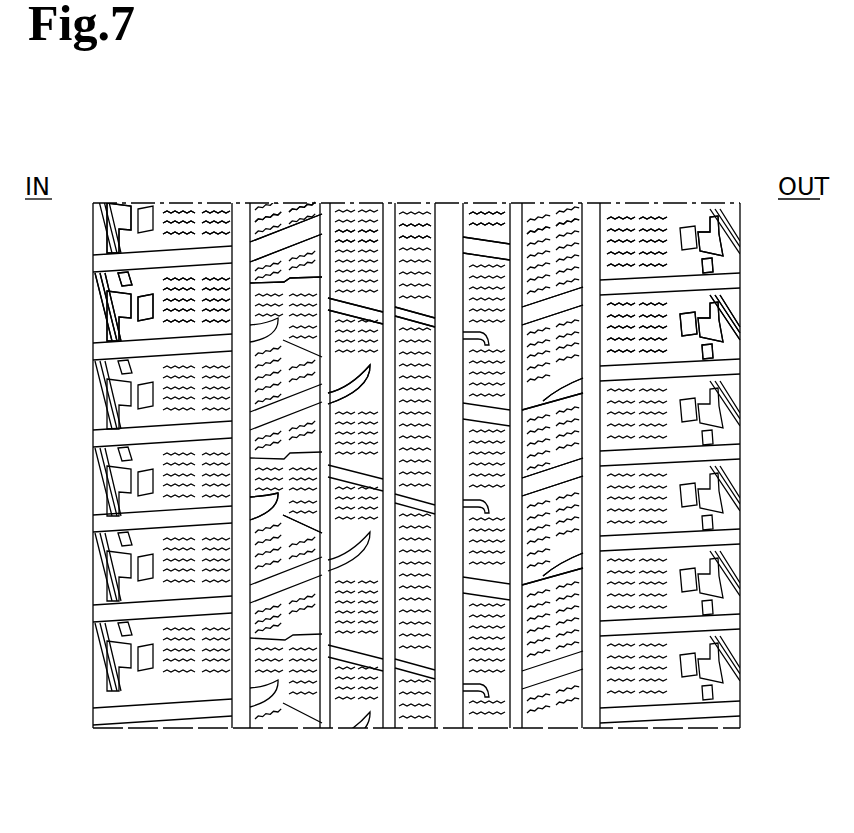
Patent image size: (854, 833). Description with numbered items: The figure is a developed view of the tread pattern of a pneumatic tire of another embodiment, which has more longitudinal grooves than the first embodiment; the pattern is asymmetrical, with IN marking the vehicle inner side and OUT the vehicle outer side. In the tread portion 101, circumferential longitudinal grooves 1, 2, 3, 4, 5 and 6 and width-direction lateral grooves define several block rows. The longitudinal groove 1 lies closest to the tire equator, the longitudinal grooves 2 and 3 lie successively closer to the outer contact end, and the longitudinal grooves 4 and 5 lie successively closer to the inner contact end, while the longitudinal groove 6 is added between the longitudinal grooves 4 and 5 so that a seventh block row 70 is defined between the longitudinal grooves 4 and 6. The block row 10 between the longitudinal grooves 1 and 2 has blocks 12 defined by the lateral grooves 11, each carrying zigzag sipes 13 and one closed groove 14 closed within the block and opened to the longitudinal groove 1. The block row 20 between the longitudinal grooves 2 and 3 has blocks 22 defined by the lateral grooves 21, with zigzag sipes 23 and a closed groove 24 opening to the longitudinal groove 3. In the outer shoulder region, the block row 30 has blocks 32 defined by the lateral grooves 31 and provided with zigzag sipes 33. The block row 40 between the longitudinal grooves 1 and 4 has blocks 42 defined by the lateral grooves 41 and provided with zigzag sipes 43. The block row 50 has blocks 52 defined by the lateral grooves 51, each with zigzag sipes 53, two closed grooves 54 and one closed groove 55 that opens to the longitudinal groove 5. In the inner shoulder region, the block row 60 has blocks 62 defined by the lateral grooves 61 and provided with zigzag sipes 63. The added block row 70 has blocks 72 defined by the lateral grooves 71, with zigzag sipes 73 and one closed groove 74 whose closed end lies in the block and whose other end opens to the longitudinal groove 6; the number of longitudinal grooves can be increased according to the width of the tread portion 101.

The longitudinal groove 1 is at (450, 220).
The longitudinal groove 2 is at (516, 213).
The longitudinal groove 3 is at (590, 220).
The longitudinal groove 4 is at (389, 213).
The longitudinal groove 5 is at (240, 212).
The longitudinal groove 6 is at (325, 213).
The block row 10 is at (510, 738).
The lateral groove 11 is at (470, 247).
The block 12 is at (487, 217).
The sipe 13 is at (500, 217).
The closed groove 14 is at (592, 487).
The block row 20 is at (582, 738).
The lateral groove 21 is at (538, 233).
The block 22 is at (547, 233).
The sipe 23 is at (567, 237).
The closed groove 24 is at (540, 574).
The block row 30 is at (735, 738).
The lateral groove 31 is at (620, 287).
The block 32 is at (637, 217).
The sipe 33 is at (650, 230).
The block row 40 is at (433, 738).
The lateral groove 41 is at (405, 222).
The block 42 is at (415, 233).
The sipe 43 is at (428, 220).
The block row 50 is at (313, 738).
The lateral groove 51 is at (265, 233).
The block 52 is at (262, 243).
The sipe 53 is at (280, 207).
The closed groove 54 is at (262, 482).
The closed groove 55 is at (278, 493).
The block row 60 is at (223, 738).
The lateral groove 61 is at (216, 257).
The block 62 is at (187, 205).
The sipe 63 is at (165, 205).
The block row 70 is at (383, 738).
The lateral groove 71 is at (335, 225).
The block 72 is at (353, 232).
The sipe 73 is at (353, 233).
The closed groove 74 is at (350, 385).
The tread portion 101 is at (712, 200).